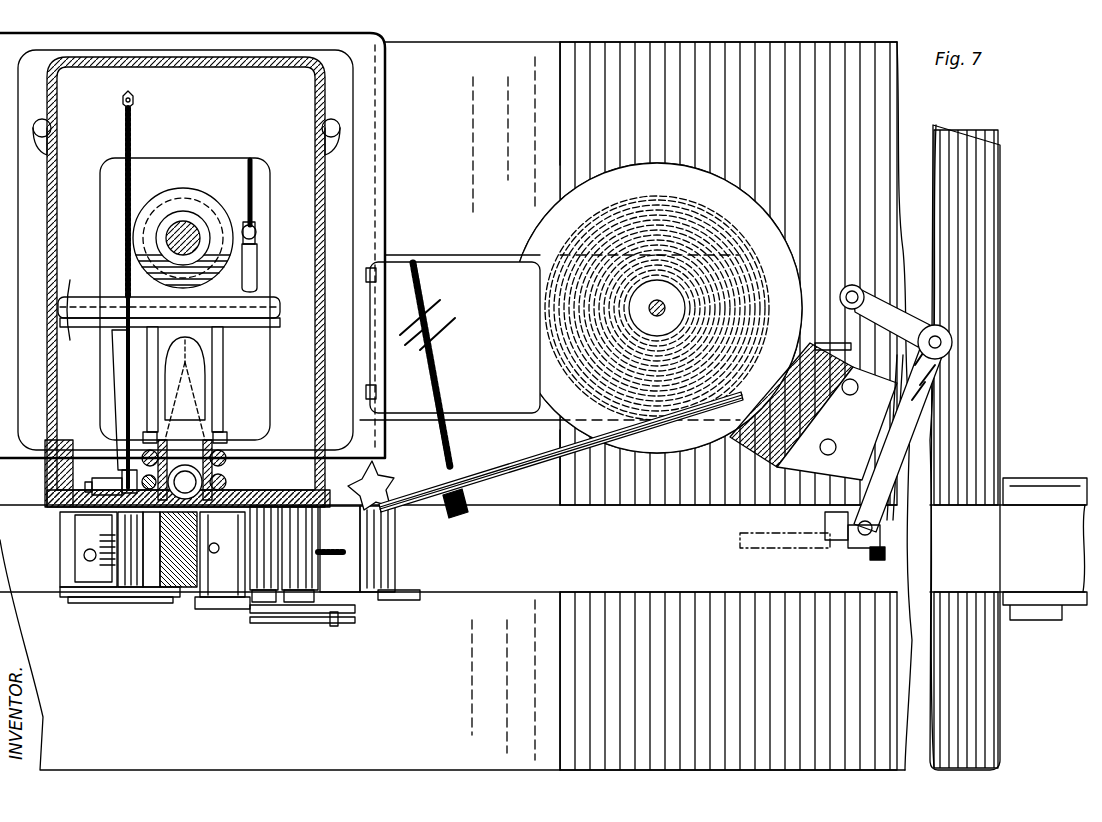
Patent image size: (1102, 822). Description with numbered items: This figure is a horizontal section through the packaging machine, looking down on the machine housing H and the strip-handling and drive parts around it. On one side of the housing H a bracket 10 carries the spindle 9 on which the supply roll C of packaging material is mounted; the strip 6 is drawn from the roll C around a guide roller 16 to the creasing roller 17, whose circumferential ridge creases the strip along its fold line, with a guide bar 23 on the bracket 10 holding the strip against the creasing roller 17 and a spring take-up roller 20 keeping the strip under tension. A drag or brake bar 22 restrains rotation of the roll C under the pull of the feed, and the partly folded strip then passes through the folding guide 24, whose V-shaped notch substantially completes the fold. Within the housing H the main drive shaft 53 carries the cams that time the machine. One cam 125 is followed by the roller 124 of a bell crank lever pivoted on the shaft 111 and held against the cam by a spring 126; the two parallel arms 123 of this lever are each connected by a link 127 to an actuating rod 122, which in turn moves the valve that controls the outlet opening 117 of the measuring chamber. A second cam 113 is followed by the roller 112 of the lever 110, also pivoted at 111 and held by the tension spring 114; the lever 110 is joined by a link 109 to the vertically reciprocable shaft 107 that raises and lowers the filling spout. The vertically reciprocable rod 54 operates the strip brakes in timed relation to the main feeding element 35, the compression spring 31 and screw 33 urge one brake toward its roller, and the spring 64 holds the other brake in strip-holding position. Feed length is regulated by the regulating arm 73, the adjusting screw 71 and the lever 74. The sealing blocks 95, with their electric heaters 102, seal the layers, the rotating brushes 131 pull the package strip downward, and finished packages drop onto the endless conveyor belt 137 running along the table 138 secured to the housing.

The spring 126 is at (135, 140).
The drive shaft 53 is at (187, 232).
The tension spring 114 is at (256, 190).
The cam 113 is at (255, 216).
The follower roller 112 is at (258, 262).
The pivot shaft 111 is at (283, 298).
The cam 125 is at (115, 230).
The lever 110 is at (125, 375).
The roller 124 is at (185, 378).
The parallel arms 123 is at (210, 395).
The link 127 is at (185, 401).
The actuating rods 122 is at (156, 450).
The outlet opening 117 is at (226, 462).
The vertically reciprocable rod 54 is at (228, 482).
The link 109 is at (128, 500).
The vertically reciprocable shaft 107 is at (122, 498).
The electric heaters 102 is at (130, 588).
The crimping and sealing block 95 is at (158, 590).
The rotatable cylindrical brushes 131 is at (168, 590).
The spring 64 is at (215, 610).
The regulating arm 73 is at (262, 610).
The main feeding element 35 is at (295, 608).
The lever 74 is at (312, 614).
The adjusting screw 71 is at (332, 626).
The screw 33 is at (340, 548).
The compression spring 31 is at (326, 556).
The machine housing H is at (390, 137).
The bracket 10 is at (470, 262).
The supply roll C is at (688, 205).
The spindle 9 is at (660, 305).
The strip or web 6 is at (826, 292).
The spring take-up roller 20 is at (857, 286).
The guide roller 16 is at (952, 345).
The drag or brake bar 22 is at (530, 468).
The folding guide 24 is at (396, 540).
The endless conveyor belt 137 is at (598, 596).
The table 138 is at (575, 758).
The guide bar 23 is at (840, 548).
The creasing roller 17 is at (876, 562).